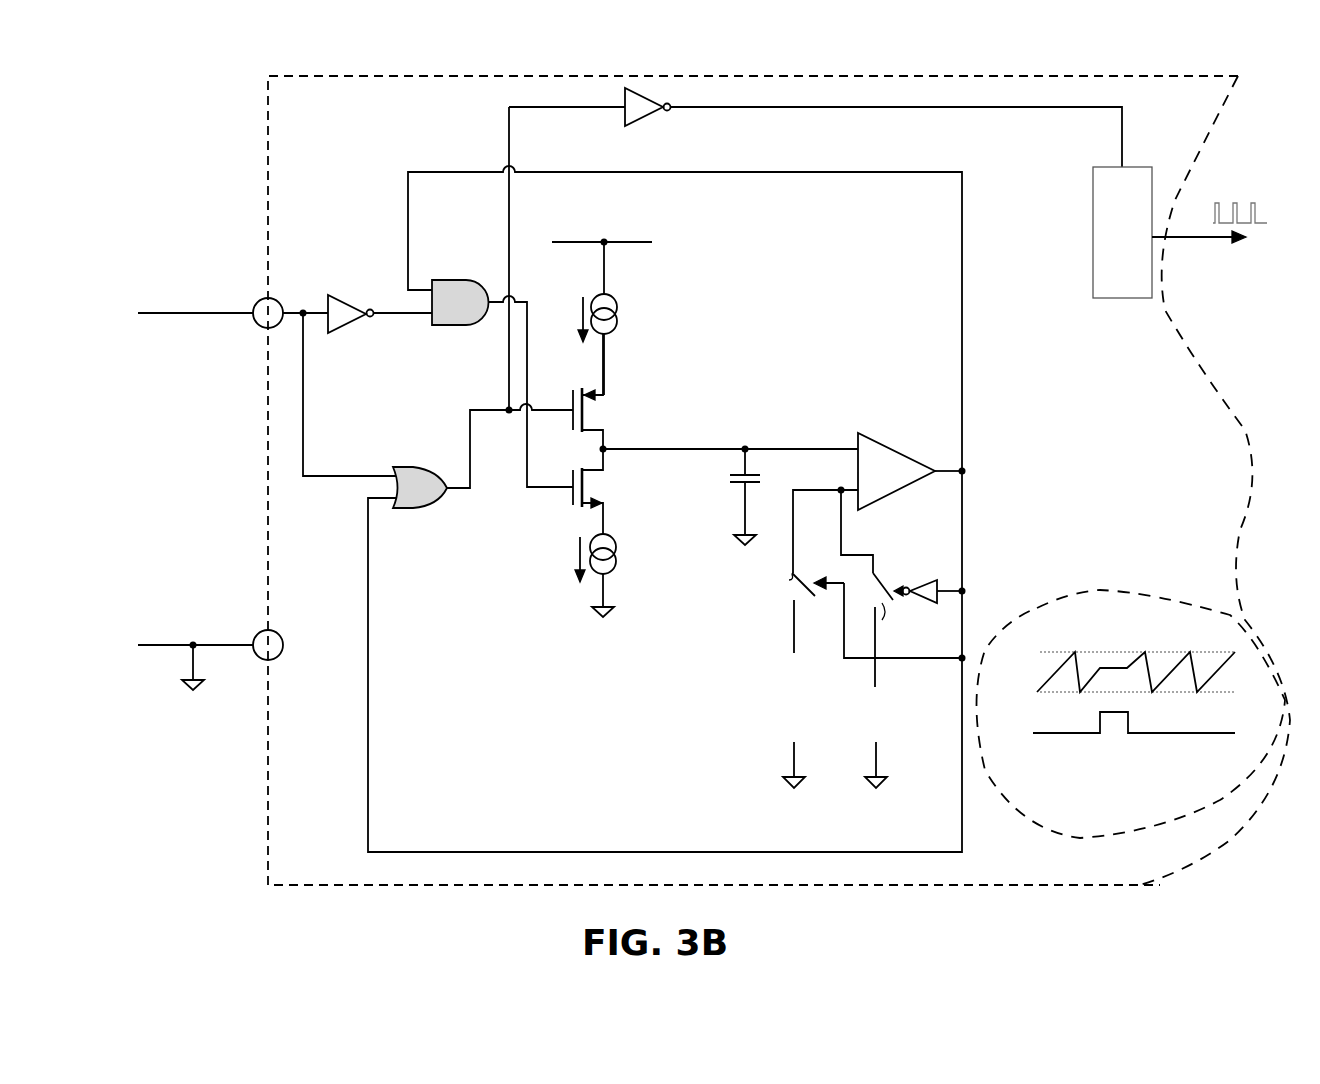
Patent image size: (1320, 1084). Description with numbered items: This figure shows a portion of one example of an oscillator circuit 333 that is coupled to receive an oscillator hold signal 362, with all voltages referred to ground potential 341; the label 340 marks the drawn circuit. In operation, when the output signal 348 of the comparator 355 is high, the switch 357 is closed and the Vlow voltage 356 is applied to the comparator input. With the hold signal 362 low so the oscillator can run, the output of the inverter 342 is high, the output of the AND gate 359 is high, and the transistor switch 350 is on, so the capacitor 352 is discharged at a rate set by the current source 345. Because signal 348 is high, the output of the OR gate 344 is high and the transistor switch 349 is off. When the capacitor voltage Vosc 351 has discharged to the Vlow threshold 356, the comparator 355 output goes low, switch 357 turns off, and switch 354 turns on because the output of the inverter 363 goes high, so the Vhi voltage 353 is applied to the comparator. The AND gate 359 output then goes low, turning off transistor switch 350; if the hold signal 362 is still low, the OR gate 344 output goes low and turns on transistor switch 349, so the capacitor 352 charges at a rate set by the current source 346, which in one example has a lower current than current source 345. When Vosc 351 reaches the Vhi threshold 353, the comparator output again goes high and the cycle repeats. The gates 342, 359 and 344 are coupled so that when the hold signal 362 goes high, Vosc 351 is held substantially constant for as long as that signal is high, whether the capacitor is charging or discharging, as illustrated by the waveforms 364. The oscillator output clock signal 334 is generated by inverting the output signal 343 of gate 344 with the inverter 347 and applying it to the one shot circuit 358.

The oscillator circuit 333 is at (350, 887).
The oscillator output clock signal 334 is at (1247, 243).
The oscillator 340 is at (147, 90).
The ground potential 341 is at (200, 698).
The inverter 342 is at (350, 335).
The output signal of gate 344 343 is at (468, 432).
The OR gate 344 is at (420, 513).
The current source 345 is at (548, 555).
The current source 346 is at (568, 305).
The inverter 347 is at (665, 110).
The comparator output signal 348 is at (823, 168).
The transistor switch 349 is at (612, 418).
The transistor switch 350 is at (608, 496).
The Vosc voltage 351 is at (700, 505).
The capacitor 352 is at (748, 470).
The Vhi voltage 353 is at (890, 700).
The switch 354 is at (887, 603).
The comparator 355 is at (907, 450).
The Vlow voltage 356 is at (738, 712).
The switch 357 is at (790, 582).
The one shot circuit 358 is at (1142, 300).
The AND gate 359 is at (455, 272).
The oscillator hold signal 362 is at (157, 300).
The inverter 363 is at (917, 575).
The waveforms 364 is at (1131, 701).